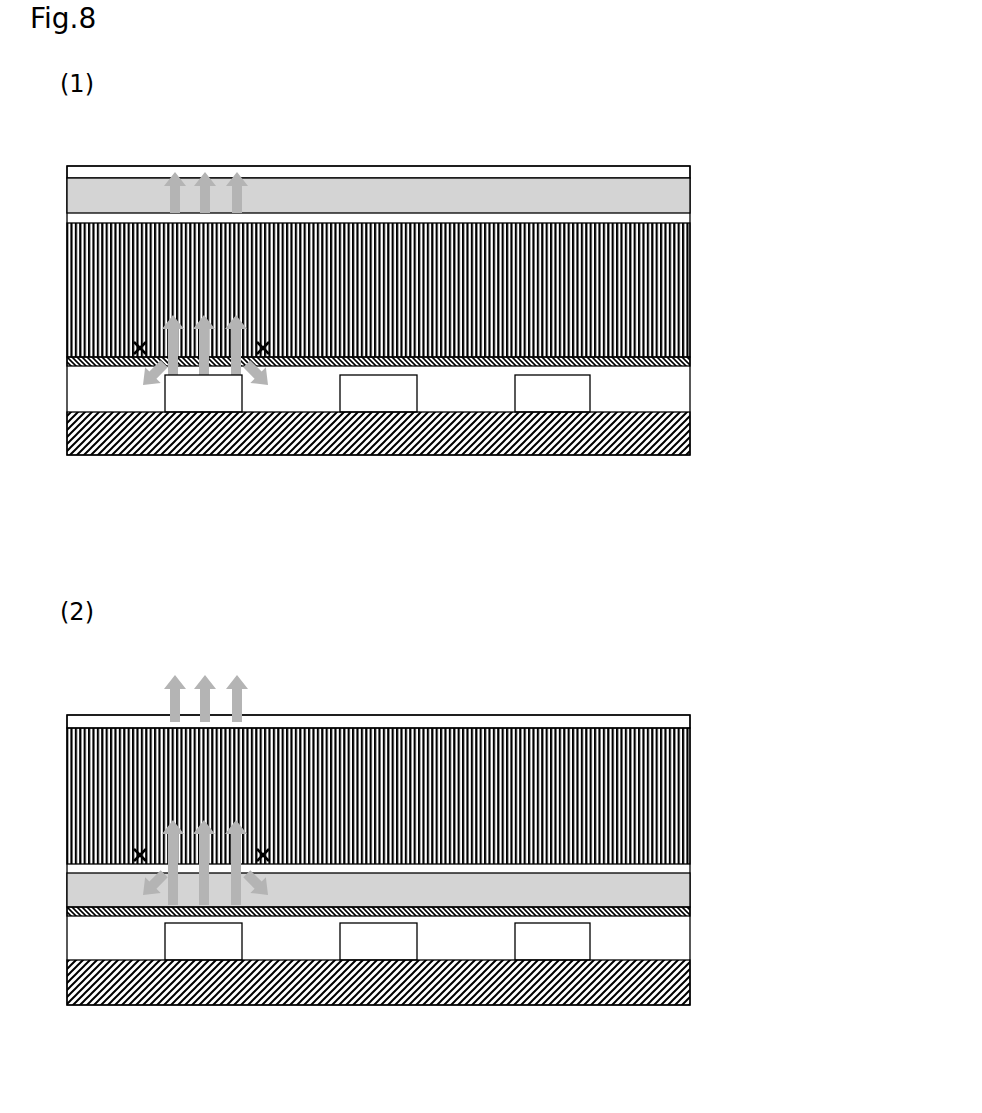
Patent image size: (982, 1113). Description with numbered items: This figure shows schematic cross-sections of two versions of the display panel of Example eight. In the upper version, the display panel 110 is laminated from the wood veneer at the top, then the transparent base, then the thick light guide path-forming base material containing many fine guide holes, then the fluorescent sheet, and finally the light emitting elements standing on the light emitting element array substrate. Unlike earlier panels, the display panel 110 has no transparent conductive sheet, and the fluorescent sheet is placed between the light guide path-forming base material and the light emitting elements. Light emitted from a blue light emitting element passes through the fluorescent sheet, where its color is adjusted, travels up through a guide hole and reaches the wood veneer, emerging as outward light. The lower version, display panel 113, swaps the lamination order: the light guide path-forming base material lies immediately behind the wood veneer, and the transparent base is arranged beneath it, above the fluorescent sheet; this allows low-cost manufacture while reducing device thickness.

The display panel 110 is at (890, 113).
The display panel 113 is at (890, 662).